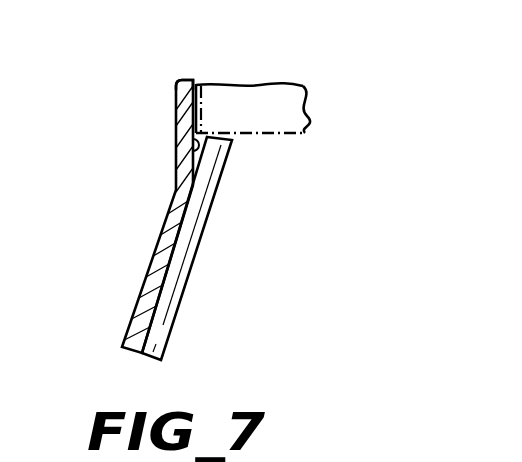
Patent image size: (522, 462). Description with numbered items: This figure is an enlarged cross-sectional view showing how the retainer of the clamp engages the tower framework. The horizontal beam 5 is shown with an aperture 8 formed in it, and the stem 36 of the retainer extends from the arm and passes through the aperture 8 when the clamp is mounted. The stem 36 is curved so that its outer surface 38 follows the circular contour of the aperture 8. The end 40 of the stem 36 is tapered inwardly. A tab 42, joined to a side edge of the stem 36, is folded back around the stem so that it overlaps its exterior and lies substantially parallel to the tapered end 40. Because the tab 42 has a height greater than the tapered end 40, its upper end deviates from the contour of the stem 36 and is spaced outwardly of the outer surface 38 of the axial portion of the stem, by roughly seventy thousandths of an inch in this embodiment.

The horizontal beam 5 is at (255, 102).
The aperture 8 is at (179, 82).
The stem 36 is at (178, 115).
The outer surface 38 is at (178, 160).
The tapered end 40 is at (163, 243).
The tab 42 is at (187, 252).